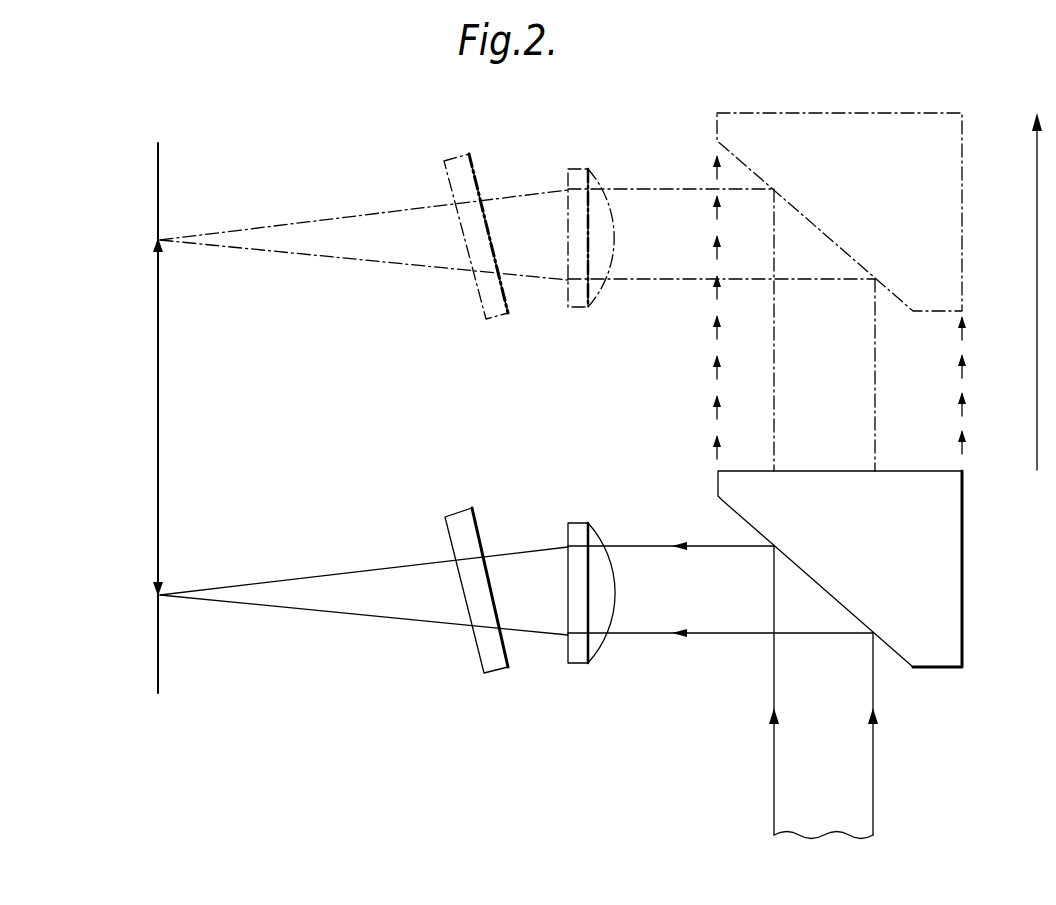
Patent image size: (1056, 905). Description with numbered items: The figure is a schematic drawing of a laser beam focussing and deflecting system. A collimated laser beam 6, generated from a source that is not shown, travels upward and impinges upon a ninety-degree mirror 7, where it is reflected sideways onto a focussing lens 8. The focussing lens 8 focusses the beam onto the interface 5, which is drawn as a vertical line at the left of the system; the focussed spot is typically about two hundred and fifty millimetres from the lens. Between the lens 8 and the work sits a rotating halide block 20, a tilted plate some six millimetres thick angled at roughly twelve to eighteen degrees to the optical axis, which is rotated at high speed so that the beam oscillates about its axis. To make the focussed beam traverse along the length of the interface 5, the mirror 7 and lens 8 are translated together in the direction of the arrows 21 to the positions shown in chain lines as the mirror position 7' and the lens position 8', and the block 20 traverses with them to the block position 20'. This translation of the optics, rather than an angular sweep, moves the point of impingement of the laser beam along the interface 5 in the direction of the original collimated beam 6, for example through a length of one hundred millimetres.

The interface 5 is at (160, 630).
The collimated laser beam 6 is at (852, 768).
The mirror 7 is at (817, 569).
The mirror position 7' is at (816, 199).
The focussing lens 8 is at (587, 565).
The focussing lens position 8' is at (588, 211).
The rotating halide block 20 is at (454, 571).
The halide block position 20' is at (465, 251).
The arrows 21 is at (716, 420).